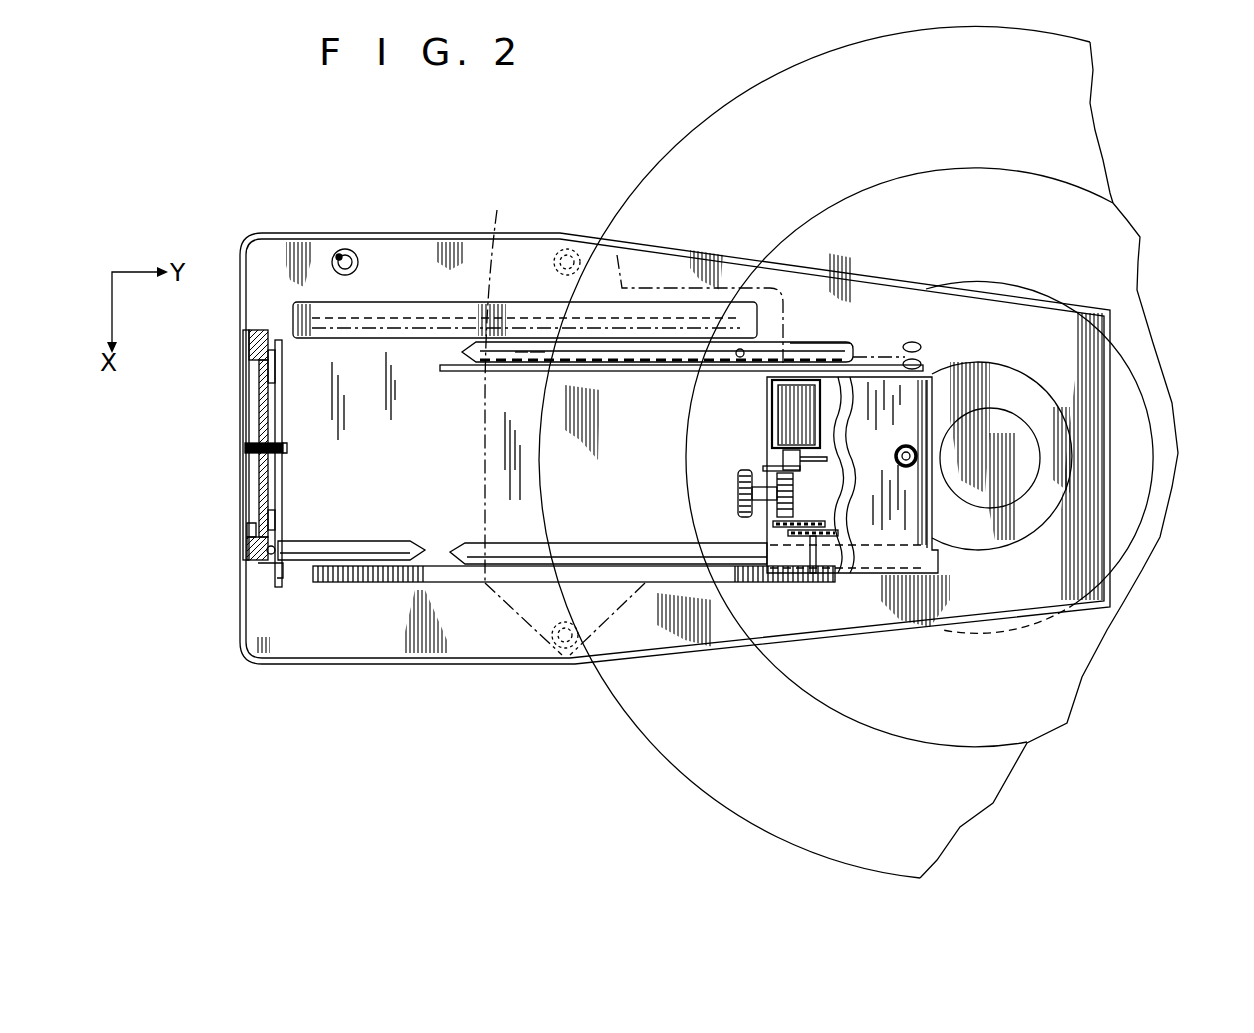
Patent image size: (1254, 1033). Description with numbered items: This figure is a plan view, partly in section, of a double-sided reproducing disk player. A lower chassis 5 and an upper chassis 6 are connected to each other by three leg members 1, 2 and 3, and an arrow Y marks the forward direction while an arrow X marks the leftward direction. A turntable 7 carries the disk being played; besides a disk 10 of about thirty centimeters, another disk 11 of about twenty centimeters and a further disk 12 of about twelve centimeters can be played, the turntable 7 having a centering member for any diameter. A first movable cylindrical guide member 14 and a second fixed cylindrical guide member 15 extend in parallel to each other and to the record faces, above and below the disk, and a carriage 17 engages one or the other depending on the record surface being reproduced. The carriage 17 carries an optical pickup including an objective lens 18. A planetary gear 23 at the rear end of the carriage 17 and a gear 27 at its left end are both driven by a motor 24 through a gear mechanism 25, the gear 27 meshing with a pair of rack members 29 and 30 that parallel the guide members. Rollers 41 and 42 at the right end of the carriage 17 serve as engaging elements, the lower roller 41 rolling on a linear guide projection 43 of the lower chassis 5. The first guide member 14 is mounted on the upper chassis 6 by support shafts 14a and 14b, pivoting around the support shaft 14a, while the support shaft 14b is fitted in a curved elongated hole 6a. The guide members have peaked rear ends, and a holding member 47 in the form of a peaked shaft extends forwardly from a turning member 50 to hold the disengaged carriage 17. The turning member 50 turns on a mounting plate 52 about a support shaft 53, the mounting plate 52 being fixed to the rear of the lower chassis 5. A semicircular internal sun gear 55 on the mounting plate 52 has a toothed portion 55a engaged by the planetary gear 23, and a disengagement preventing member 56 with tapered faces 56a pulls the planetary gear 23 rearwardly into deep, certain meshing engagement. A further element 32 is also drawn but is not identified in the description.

The leg member 1 is at (562, 648).
The leg member 2 is at (565, 252).
The leg member 3 is at (345, 249).
The lower chassis 5 is at (1093, 503).
The upper chassis 6 is at (617, 255).
The elongated hole 6a is at (540, 365).
The turntable 7 is at (1070, 433).
The disk 10 is at (1083, 149).
The disk 11 is at (1138, 292).
The disk 12 is at (1133, 467).
The first movable cylindrical guide member 14 is at (650, 342).
The support shaft 14a is at (730, 360).
The support shaft 14b is at (523, 355).
The second fixed cylindrical guide member 15 is at (684, 585).
The carriage 17 is at (937, 388).
The objective lens 18 is at (915, 452).
The planetary gear 23 is at (738, 488).
The motor 24 is at (813, 350).
The gear mechanism 25 is at (775, 527).
The gear 27 is at (833, 586).
The rack member 29 is at (420, 305).
The rack member 30 is at (470, 583).
The reference line 32 is at (497, 380).
The lower roller 41 is at (921, 362).
The upper roller 42 is at (920, 345).
The linear guide projection 43 is at (457, 366).
The holding member 47 is at (297, 563).
The turning member 50 is at (283, 397).
The mounting plate 52 is at (243, 395).
The support shaft 53 is at (253, 440).
The semicircular internal sun gear 55 is at (242, 552).
The toothed portion 55a is at (250, 528).
The disengagement preventing member 56 is at (260, 465).
The tapered face 56a is at (268, 372).